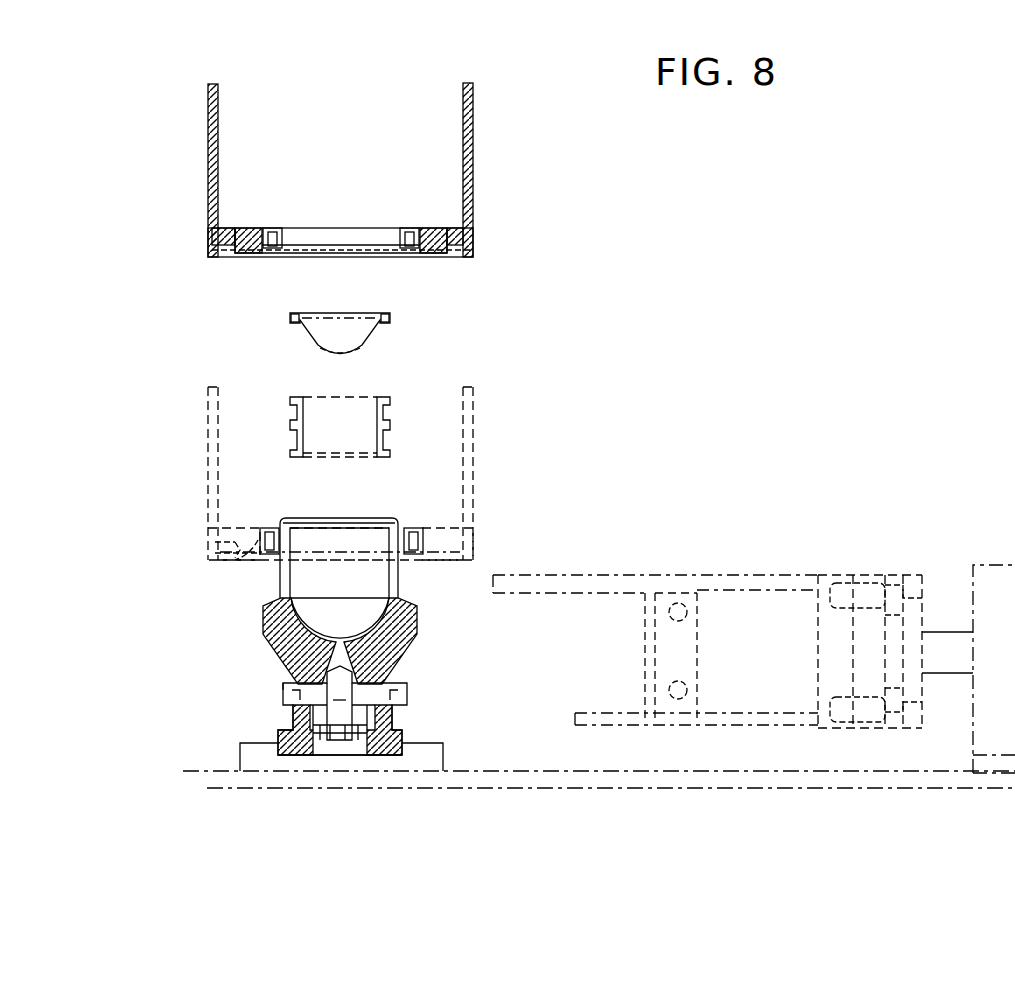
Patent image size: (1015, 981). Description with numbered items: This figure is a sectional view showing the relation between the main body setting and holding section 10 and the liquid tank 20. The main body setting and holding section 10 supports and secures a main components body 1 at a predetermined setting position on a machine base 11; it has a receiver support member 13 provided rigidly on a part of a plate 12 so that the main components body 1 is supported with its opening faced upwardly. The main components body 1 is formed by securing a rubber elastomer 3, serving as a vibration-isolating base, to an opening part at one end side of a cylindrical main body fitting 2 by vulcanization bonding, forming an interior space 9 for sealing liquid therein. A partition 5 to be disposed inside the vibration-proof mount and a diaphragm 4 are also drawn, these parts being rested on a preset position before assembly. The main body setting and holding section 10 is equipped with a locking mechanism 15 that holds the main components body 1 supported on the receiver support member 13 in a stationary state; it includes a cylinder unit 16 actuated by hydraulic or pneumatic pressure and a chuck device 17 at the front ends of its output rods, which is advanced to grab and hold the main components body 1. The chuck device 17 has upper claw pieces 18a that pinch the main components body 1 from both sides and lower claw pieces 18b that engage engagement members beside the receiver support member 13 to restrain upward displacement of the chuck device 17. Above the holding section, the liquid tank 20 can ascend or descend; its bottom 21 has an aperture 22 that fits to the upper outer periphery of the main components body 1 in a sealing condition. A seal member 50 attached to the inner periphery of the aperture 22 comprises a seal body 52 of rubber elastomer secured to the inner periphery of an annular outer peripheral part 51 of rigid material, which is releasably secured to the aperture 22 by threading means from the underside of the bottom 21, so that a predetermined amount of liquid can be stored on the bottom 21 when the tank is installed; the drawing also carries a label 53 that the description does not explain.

The main components body 1 is at (282, 562).
The cylindrical main body fitting 2 is at (280, 596).
The rubber elastomer 3 is at (385, 645).
The diaphragm 4 is at (392, 318).
The partition 5 is at (384, 396).
The interior space 9 is at (360, 598).
The main body setting and holding section 10 is at (258, 670).
The machine base 11 is at (530, 780).
The plate 12 is at (418, 758).
The receiver support member 13 is at (296, 746).
The locking mechanism 15 is at (848, 560).
The cylinder unit 16 is at (991, 568).
The chuck device 17 is at (757, 578).
The upper claw pieces 18a is at (600, 582).
The lower claw pieces 18b is at (611, 726).
The liquid tank 20 is at (477, 145).
The bottom 21 is at (230, 228).
The aperture 22 is at (462, 226).
The seal member 50 is at (384, 136).
The annular outer peripheral part 51 is at (256, 226).
The seal body 52 is at (290, 228).
The bottom plate 53 is at (458, 257).